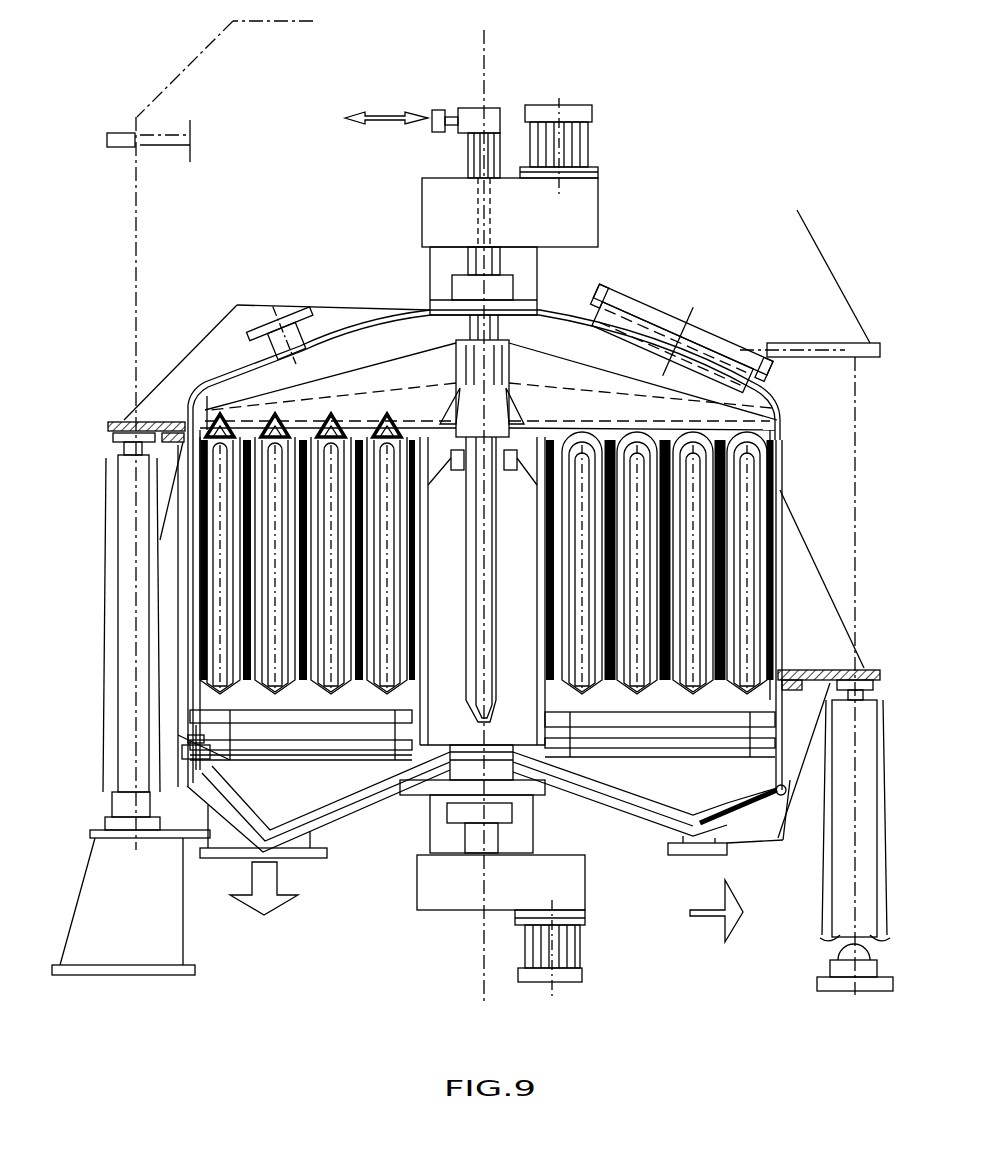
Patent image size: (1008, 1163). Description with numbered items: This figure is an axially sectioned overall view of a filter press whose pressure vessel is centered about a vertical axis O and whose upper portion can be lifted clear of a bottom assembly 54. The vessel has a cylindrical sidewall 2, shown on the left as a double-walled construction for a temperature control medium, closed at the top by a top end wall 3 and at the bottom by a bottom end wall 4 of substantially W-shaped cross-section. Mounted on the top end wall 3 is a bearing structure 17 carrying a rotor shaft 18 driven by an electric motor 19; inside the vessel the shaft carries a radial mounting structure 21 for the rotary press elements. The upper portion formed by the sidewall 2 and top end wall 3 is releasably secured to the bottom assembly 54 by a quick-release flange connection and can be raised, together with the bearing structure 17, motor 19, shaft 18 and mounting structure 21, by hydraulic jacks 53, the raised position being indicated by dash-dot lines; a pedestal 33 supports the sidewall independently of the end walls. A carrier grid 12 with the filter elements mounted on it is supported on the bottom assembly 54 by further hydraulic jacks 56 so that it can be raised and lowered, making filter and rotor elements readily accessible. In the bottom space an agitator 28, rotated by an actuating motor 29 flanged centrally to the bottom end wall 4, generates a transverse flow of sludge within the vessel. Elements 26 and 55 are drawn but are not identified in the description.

The vertical axis O is at (491, 73).
The cylindrical sidewall 2 is at (778, 487).
The top end wall 3 is at (772, 413).
The bottom end wall 4 is at (636, 815).
The carrier grid 12 is at (342, 712).
The bearing structure 17 is at (525, 281).
The rotor shaft 18 is at (462, 338).
The electric motor 19 is at (590, 140).
The radial mounting structure 21 is at (347, 407).
The shaft guide housing 26 is at (495, 117).
The agitator 28 is at (383, 779).
The actuating motor 29 is at (576, 946).
The pedestal 33 is at (848, 347).
The hydraulic jacks 53 is at (130, 530).
The bottom assembly 54 is at (783, 818).
The support flange 55 is at (790, 668).
The hydraulic jacks 56 is at (200, 738).